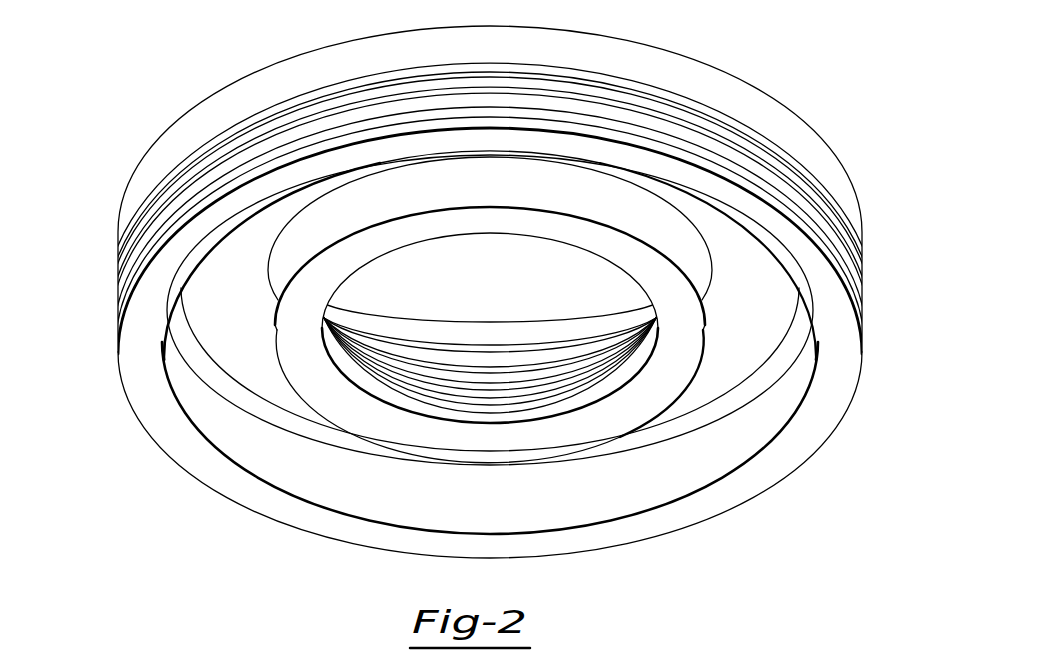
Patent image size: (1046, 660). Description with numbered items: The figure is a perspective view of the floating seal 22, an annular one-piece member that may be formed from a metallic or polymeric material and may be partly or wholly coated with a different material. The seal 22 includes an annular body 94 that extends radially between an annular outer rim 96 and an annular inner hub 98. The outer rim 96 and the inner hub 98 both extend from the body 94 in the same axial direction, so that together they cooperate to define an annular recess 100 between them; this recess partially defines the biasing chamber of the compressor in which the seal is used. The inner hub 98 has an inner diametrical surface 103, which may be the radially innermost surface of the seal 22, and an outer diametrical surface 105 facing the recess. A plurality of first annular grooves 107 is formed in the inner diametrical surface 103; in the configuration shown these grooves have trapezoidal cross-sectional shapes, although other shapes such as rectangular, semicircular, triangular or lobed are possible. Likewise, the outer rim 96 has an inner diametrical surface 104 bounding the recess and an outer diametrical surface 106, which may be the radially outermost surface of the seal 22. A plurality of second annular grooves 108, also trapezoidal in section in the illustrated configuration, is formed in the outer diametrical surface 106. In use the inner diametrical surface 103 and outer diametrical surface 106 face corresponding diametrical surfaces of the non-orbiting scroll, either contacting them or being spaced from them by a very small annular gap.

The seal 22 is at (161, 108).
The annular body 94 is at (735, 347).
The annular outer rim 96 is at (175, 423).
The annular inner hub 98 is at (633, 398).
The annular recess 100 is at (762, 313).
The inner diametrical surface 103 is at (412, 405).
The inner diametrical surface 104 is at (257, 452).
The outer diametrical surface 105 is at (293, 256).
The outer diametrical surface 106 is at (782, 128).
The first annular grooves 107 is at (500, 416).
The second annular grooves 108 is at (592, 81).